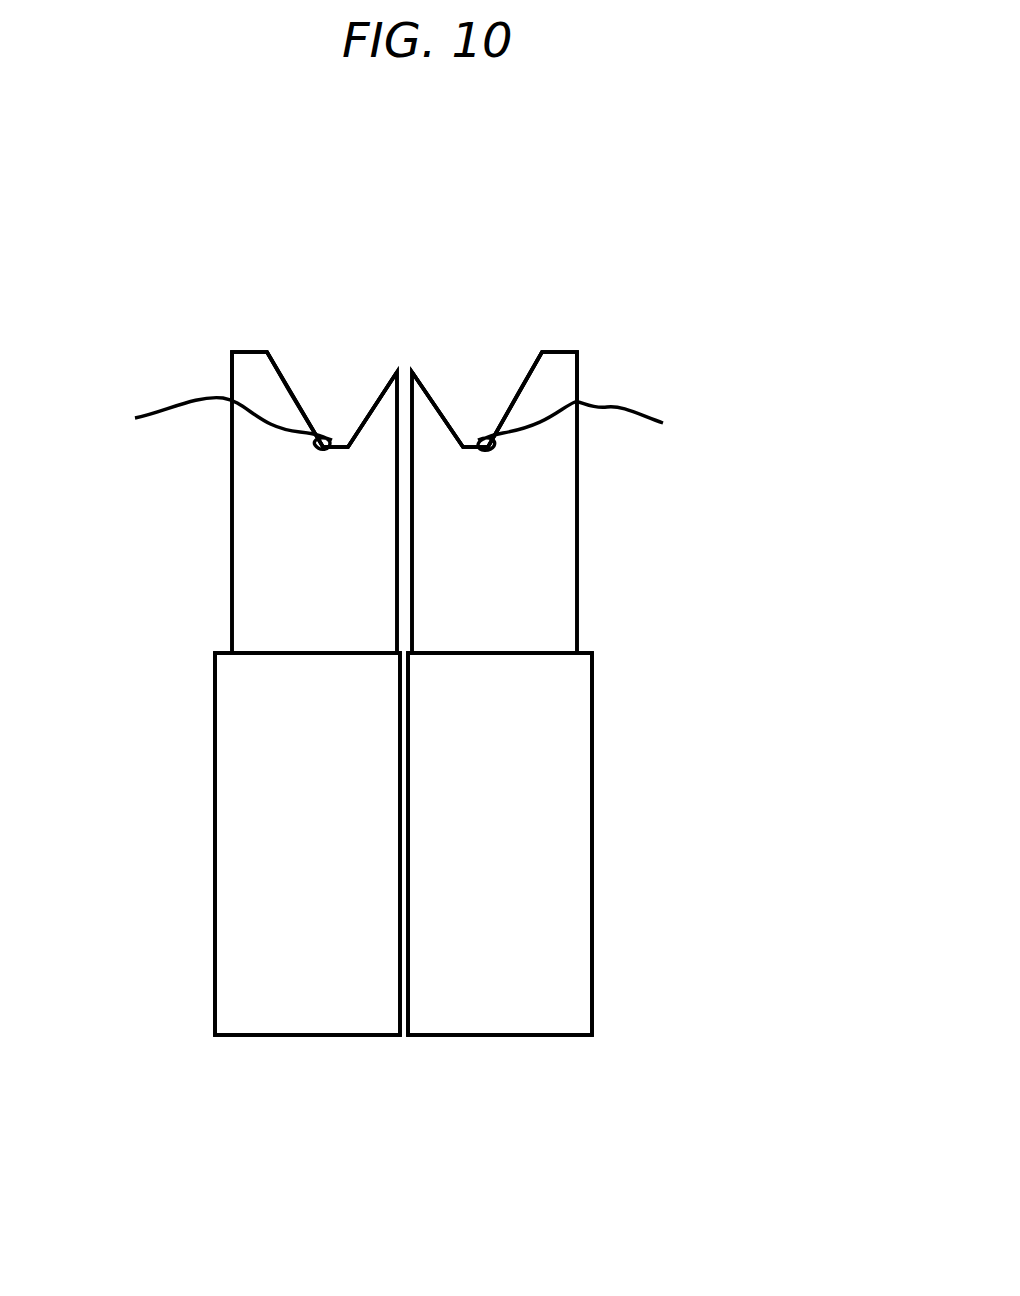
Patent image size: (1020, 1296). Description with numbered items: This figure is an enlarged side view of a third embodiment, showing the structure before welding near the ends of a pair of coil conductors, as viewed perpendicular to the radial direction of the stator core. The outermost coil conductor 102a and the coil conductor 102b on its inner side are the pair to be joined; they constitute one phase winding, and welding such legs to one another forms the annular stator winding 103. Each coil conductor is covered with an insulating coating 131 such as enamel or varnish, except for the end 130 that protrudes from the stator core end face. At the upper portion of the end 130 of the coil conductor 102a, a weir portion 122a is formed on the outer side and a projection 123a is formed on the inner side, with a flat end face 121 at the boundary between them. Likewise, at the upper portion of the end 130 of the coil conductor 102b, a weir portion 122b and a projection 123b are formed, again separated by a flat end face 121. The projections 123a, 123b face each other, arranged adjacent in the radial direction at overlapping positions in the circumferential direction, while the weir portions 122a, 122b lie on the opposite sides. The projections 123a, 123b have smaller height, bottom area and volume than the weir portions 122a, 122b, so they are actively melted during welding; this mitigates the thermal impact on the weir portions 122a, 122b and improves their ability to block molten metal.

The stator winding 103 is at (802, 262).
The end 130 is at (232, 587).
The insulating coating 131 is at (215, 737).
The coil conductor 102a is at (483, 980).
The coil conductor 102b is at (368, 987).
The flat end face 121 is at (396, 424).
The weir portion 122a is at (563, 352).
The weir portion 122b is at (243, 352).
The projection 123a is at (418, 375).
The projection 123b is at (397, 372).